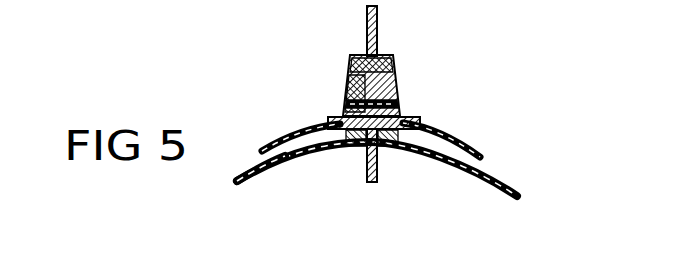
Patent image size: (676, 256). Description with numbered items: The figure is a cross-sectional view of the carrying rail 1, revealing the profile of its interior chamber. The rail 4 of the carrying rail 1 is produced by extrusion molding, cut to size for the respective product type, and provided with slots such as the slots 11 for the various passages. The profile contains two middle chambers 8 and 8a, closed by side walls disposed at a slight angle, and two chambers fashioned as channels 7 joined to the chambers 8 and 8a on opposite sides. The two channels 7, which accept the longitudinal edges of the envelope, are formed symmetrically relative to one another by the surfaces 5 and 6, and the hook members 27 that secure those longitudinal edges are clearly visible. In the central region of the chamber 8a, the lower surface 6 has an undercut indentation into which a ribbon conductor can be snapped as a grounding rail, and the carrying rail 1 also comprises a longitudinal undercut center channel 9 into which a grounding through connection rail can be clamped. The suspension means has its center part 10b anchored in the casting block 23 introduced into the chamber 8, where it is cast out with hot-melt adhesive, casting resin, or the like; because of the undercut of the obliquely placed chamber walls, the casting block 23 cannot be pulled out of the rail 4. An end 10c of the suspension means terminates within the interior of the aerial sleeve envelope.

The carrying rail 1 is at (500, 157).
The rail 4 is at (395, 88).
The surface 5 is at (296, 125).
The lower surface 6 is at (250, 178).
The channels 7 is at (325, 134).
The chamber 8 is at (350, 82).
The chamber 8a is at (408, 132).
The longitudinal undercut center channel 9 is at (354, 146).
The center part 10b is at (379, 34).
The end 10c is at (372, 182).
The slots 11 is at (396, 94).
The casting block 23 is at (394, 72).
The hook members 27 is at (456, 130).